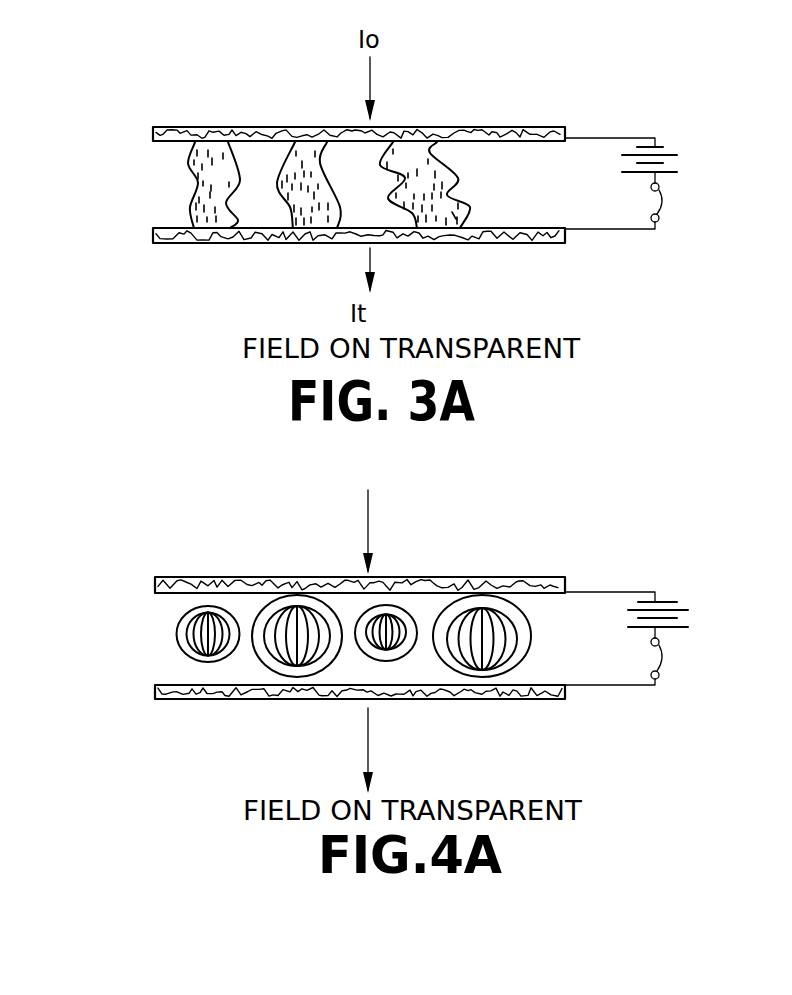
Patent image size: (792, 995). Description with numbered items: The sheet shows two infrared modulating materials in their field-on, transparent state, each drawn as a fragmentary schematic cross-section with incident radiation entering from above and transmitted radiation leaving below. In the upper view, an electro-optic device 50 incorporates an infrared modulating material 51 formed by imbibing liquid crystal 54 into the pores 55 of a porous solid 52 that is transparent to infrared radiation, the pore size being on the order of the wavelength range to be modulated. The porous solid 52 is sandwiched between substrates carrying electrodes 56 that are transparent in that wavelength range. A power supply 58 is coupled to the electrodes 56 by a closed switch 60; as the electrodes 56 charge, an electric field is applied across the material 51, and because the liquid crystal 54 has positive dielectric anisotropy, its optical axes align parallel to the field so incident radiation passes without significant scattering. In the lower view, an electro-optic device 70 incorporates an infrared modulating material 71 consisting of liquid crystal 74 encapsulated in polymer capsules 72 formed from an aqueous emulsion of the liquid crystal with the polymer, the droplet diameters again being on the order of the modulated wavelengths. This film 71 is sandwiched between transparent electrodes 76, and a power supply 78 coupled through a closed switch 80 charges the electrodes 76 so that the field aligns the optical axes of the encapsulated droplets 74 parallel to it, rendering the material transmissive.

In FIG. 3A, the electro-optic device 50 is at (298, 255).
In FIG. 3A, the infrared modulating material 51 is at (486, 161).
In FIG. 3A, the porous solid 52 is at (388, 220).
In FIG. 3A, the liquid crystal 54 is at (450, 218).
In FIG. 3A, the pores 55 is at (417, 148).
In FIG. 3A, the electrodes 56 is at (217, 128).
In FIG. 3A, the power supply 58 is at (690, 145).
In FIG. 3A, the switch 60 is at (662, 197).
In FIG. 4A, the electro-optic device 70 is at (329, 708).
In FIG. 4A, the infrared modulating material 71 is at (526, 594).
In FIG. 4A, the polymer capsules 72 is at (510, 668).
In FIG. 4A, the liquid crystal 74 is at (480, 663).
In FIG. 4A, the electrodes 76 is at (223, 577).
In FIG. 4A, the power supply 78 is at (695, 599).
In FIG. 4A, the switch 80 is at (665, 655).